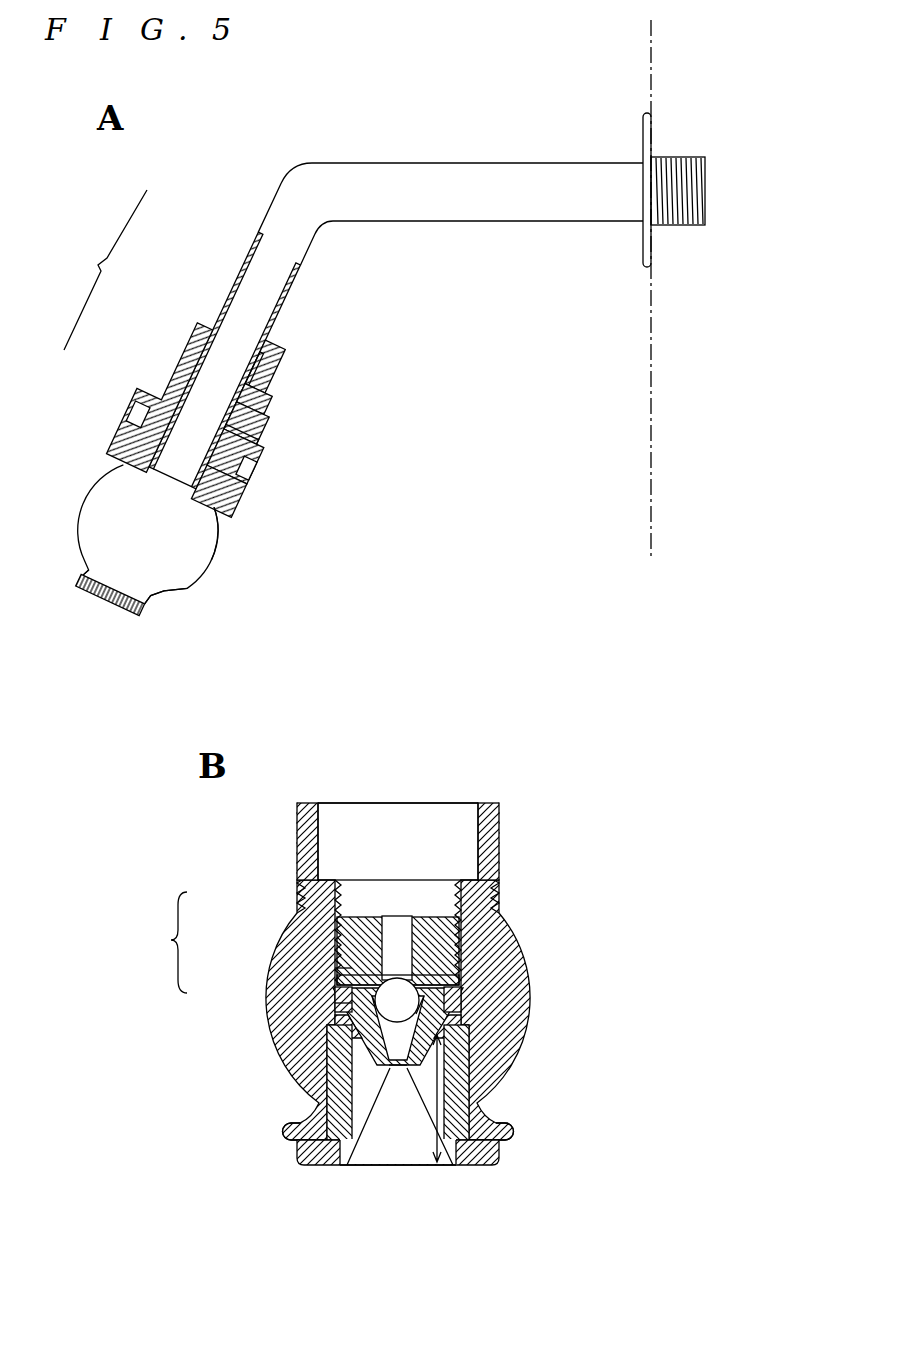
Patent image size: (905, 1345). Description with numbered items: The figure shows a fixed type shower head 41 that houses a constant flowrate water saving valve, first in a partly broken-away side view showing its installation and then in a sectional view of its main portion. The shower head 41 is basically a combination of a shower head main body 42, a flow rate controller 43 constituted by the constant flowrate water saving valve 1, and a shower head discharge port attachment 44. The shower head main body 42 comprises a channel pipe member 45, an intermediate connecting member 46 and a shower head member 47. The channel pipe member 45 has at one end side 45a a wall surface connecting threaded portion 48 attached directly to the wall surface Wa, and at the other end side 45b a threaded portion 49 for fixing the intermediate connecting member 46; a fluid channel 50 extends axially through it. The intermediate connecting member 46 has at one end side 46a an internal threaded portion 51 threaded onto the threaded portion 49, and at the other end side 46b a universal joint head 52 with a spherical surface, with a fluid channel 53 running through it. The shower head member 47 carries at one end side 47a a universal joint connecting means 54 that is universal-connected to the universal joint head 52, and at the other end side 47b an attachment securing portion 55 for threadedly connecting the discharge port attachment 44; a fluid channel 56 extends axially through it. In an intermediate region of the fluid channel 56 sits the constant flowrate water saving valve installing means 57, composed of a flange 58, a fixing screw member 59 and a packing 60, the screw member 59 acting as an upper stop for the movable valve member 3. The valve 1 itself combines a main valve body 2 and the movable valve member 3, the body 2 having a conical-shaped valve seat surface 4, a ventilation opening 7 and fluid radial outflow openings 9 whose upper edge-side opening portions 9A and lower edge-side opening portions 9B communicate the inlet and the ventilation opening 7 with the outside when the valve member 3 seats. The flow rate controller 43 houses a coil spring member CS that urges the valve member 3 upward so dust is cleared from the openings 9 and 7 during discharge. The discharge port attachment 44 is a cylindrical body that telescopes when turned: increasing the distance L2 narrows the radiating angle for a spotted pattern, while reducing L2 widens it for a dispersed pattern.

In FIG. 5A, the fixed type shower head 41 is at (336, 135).
In FIG. 5B, the fixed type shower head 41 is at (314, 775).
In FIG. 5A, the shower head main body 42 is at (88, 270).
In FIG. 5A, the shower head discharge port attachment 44 is at (99, 600).
In FIG. 5B, the shower head discharge port attachment 44 is at (495, 1148).
In FIG. 5A, the channel pipe member 45 is at (236, 268).
In FIG. 5A, the one end side of channel pipe member 45a is at (626, 172).
In FIG. 5A, the other end side of channel pipe member 45b is at (267, 375).
In FIG. 5A, the intermediate connecting member 46 is at (181, 337).
In FIG. 5A, the one end side of intermediate connecting member 46a is at (262, 398).
In FIG. 5A, the other end side of intermediate connecting member 46b is at (238, 490).
In FIG. 5A, the shower head member 47 is at (97, 457).
In FIG. 5B, the shower head member 47 is at (297, 882).
In FIG. 5A, the one end side of shower head member 47a is at (222, 515).
In FIG. 5A, the other end side of shower head member 47b is at (128, 584).
In FIG. 5A, the wall surface connecting threaded portion 48 is at (690, 158).
In FIG. 5A, the threaded portion 49 is at (266, 385).
In FIG. 5A, the fluid channel 50 is at (271, 262).
In FIG. 5A, the internal threaded portion 51 is at (262, 388).
In FIG. 5A, the universal joint head 52 is at (247, 450).
In FIG. 5A, the fluid channel 53 is at (230, 431).
In FIG. 5A, the universal joint connecting means 54 is at (241, 513).
In FIG. 5B, the universal joint connecting means 54 is at (516, 806).
In FIG. 5A, the attachment securing portion 55 is at (152, 598).
In FIG. 5B, the attachment securing portion 55 is at (490, 1118).
In FIG. 5A, the fluid channel 56 is at (160, 497).
In FIG. 5B, the fluid channel 56 is at (372, 845).
In FIG. 5A, the wall surface Wa is at (651, 324).
In FIG. 5B, the constant flowrate water saving valve 1 is at (160, 946).
In FIG. 5B, the main valve body 2 is at (329, 994).
In FIG. 5B, the movable valve member 3 is at (335, 968).
In FIG. 5B, the conical-shaped valve seat surface 4 is at (420, 985).
In FIG. 5B, the ventilation opening 7 is at (397, 1067).
In FIG. 5B, the fluid radial outflow openings 9 is at (363, 1037).
In FIG. 5B, the upper edge-side opening portions 9A is at (468, 1003).
In FIG. 5B, the lower edge-side opening portions 9B is at (447, 1043).
In FIG. 5B, the flow rate controller 43 is at (360, 1062).
In FIG. 5B, the constant flowrate water saving valve installing means 57 is at (613, 803).
In FIG. 5B, the flange 58 is at (468, 1010).
In FIG. 5B, the constant flowrate water saving valve fixing screw member 59 is at (462, 935).
In FIG. 5B, the packing 60 is at (463, 980).
In FIG. 5B, the coil spring member CS is at (402, 1067).
In FIG. 5B, the distance L2 is at (422, 1135).